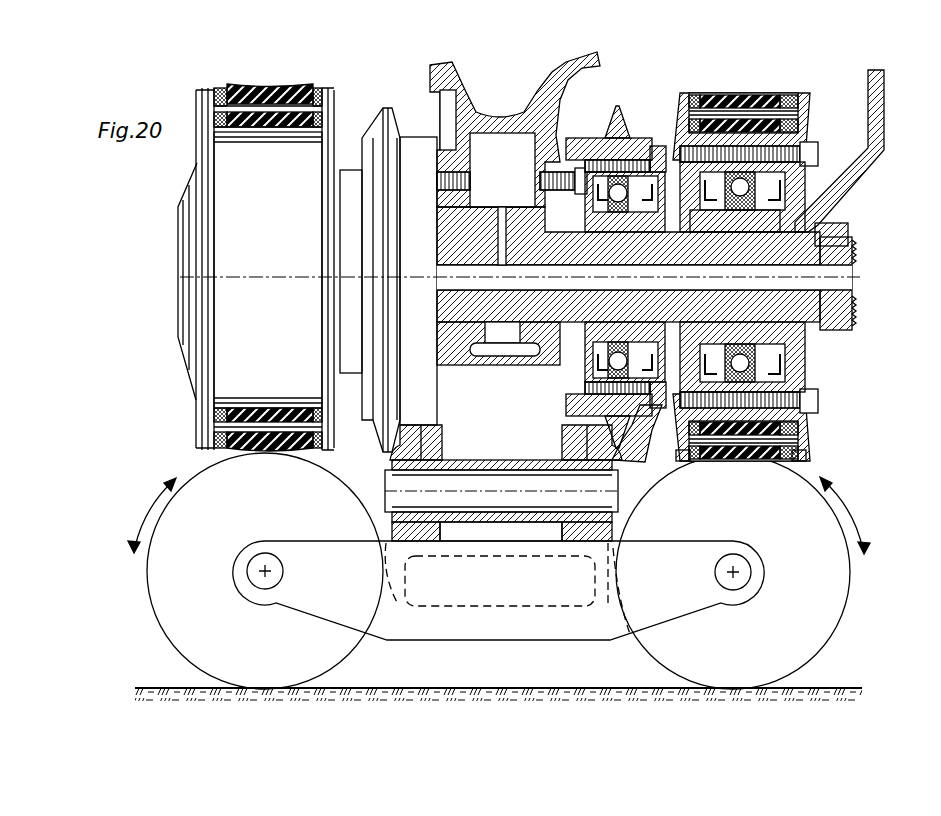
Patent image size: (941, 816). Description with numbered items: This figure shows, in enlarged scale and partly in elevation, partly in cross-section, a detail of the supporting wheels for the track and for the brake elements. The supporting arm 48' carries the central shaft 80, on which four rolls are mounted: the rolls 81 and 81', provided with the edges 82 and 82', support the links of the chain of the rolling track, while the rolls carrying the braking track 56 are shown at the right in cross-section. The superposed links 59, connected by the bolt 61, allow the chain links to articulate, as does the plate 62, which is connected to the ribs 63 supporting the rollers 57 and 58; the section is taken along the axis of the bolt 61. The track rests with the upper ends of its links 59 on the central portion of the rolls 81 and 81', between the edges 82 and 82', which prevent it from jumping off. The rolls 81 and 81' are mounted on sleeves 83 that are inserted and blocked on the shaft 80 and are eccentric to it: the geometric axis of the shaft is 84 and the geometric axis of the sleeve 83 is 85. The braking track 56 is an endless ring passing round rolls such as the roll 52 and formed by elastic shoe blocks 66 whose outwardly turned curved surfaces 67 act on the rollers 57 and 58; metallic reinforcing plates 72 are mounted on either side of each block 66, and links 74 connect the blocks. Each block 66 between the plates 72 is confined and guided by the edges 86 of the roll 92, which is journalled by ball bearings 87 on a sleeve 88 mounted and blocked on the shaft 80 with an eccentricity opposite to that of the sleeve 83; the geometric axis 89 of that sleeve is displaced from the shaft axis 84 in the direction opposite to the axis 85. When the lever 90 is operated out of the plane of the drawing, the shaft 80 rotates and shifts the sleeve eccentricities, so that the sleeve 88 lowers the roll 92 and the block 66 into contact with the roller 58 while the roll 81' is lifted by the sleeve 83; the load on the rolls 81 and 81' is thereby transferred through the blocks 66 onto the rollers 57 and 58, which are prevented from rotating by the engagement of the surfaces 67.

The supporting arm 48' is at (515, 127).
The roll 52 is at (810, 373).
The endless ring 56 is at (769, 95).
The roller 57 is at (157, 610).
The roller 58 is at (832, 617).
The superposed links 59 is at (437, 445).
The bolt 61 is at (488, 499).
The plate 62 is at (492, 537).
The ribs 63 is at (548, 630).
The shoe block 66 is at (727, 95).
The curved surface 67 is at (733, 455).
The reinforcing plates 72 is at (690, 456).
The links 74 is at (668, 418).
The central shaft 80 is at (458, 314).
The roll 81 is at (420, 265).
The roll 81' is at (609, 126).
The edge 82 is at (370, 260).
The edge 82' is at (621, 259).
The sleeve 83 is at (596, 228).
The geometric axis of the shaft 84 is at (493, 278).
The geometric axis of the sleeve 85 is at (578, 280).
The edges 86 is at (683, 108).
The ball bearings 87 is at (728, 222).
The sleeve 88 is at (820, 218).
The geometric axis of the sleeve 89 is at (795, 273).
The lever 90 is at (880, 106).
The roll 92 is at (805, 167).